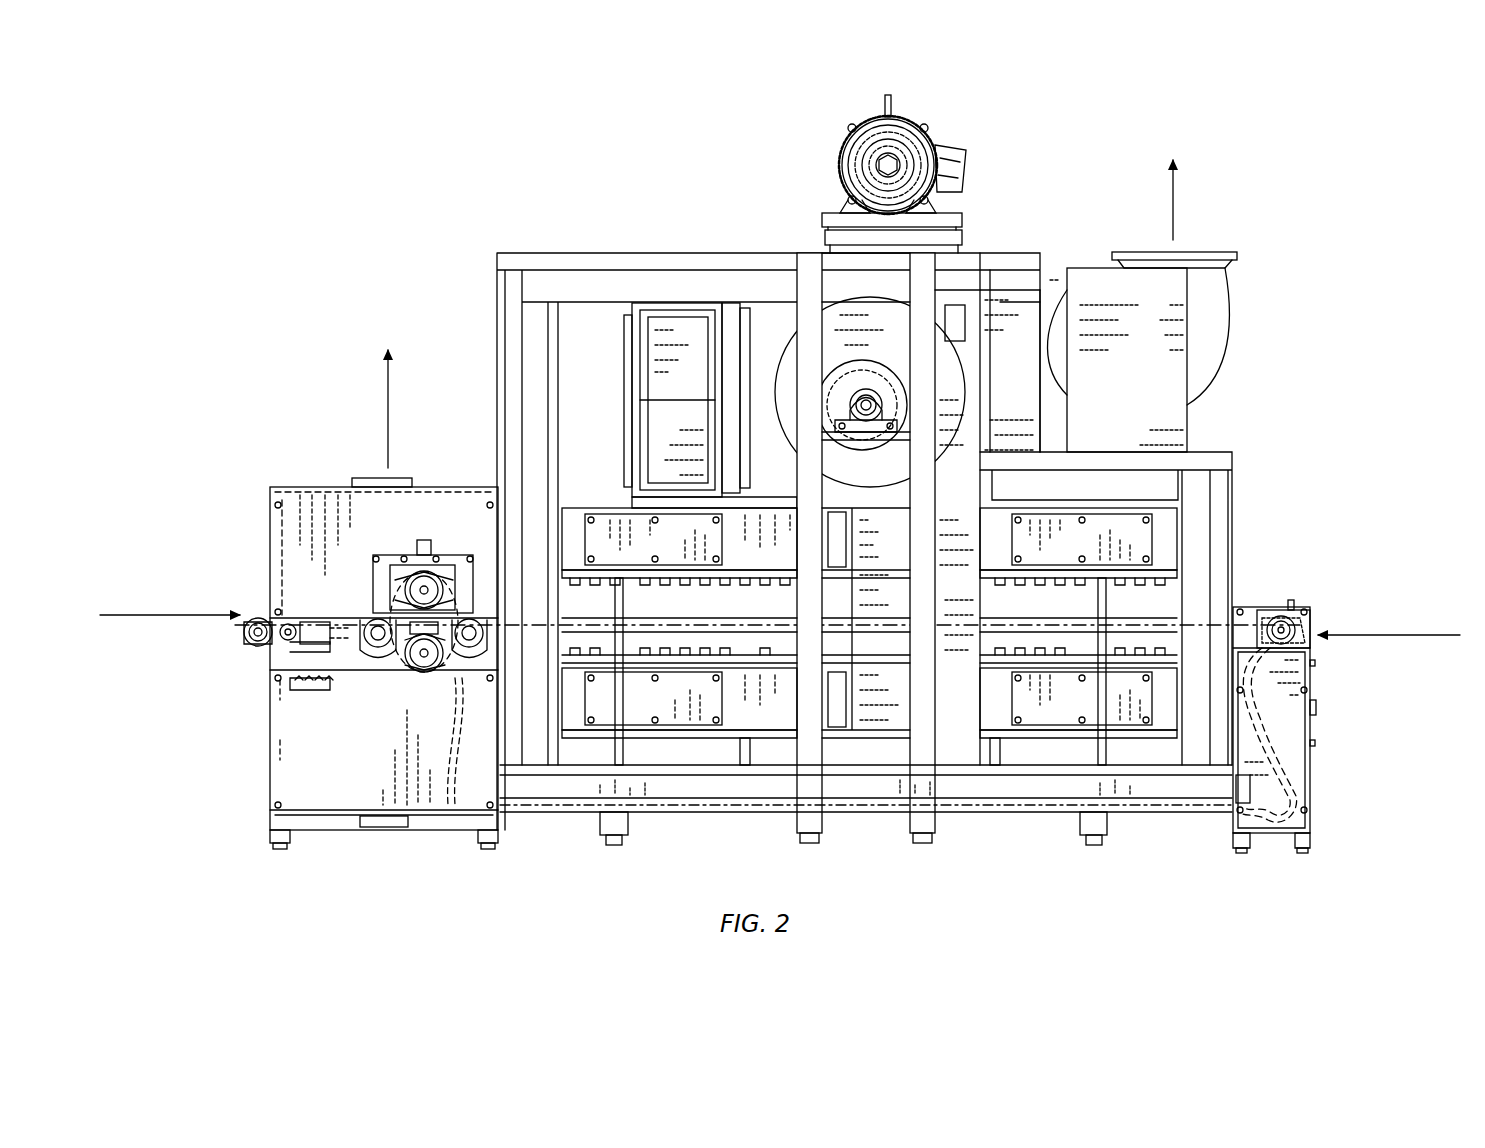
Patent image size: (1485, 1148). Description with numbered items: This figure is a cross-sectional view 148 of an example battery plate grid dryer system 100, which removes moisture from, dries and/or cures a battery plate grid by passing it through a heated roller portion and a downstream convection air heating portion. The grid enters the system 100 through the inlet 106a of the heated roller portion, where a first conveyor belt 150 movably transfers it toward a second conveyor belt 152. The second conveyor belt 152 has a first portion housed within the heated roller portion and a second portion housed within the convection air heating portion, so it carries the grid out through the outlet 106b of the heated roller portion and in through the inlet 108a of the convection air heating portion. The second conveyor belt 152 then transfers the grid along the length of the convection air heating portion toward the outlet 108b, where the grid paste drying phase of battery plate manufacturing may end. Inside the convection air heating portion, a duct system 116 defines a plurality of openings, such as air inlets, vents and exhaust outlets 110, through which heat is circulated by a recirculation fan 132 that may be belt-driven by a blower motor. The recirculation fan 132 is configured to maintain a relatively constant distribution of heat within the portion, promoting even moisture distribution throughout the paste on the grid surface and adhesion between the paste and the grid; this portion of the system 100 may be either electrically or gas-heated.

The battery plate grid dryer system 100 is at (355, 195).
The inlet of the heated roller portion 106a is at (258, 612).
The outlet of the heated roller portion 106b is at (487, 583).
The inlet of the convection air heating portion 108a is at (508, 610).
The outlet of the convection air heating portion 108b is at (1242, 613).
The exhaust outlets 110 is at (1193, 155).
The duct system 116 is at (1160, 540).
The recirculation fan 132 is at (893, 398).
The cross-sectional view 148 is at (1380, 155).
The first conveyor belt 150 is at (297, 643).
The second conveyor belt 152 is at (1262, 707).